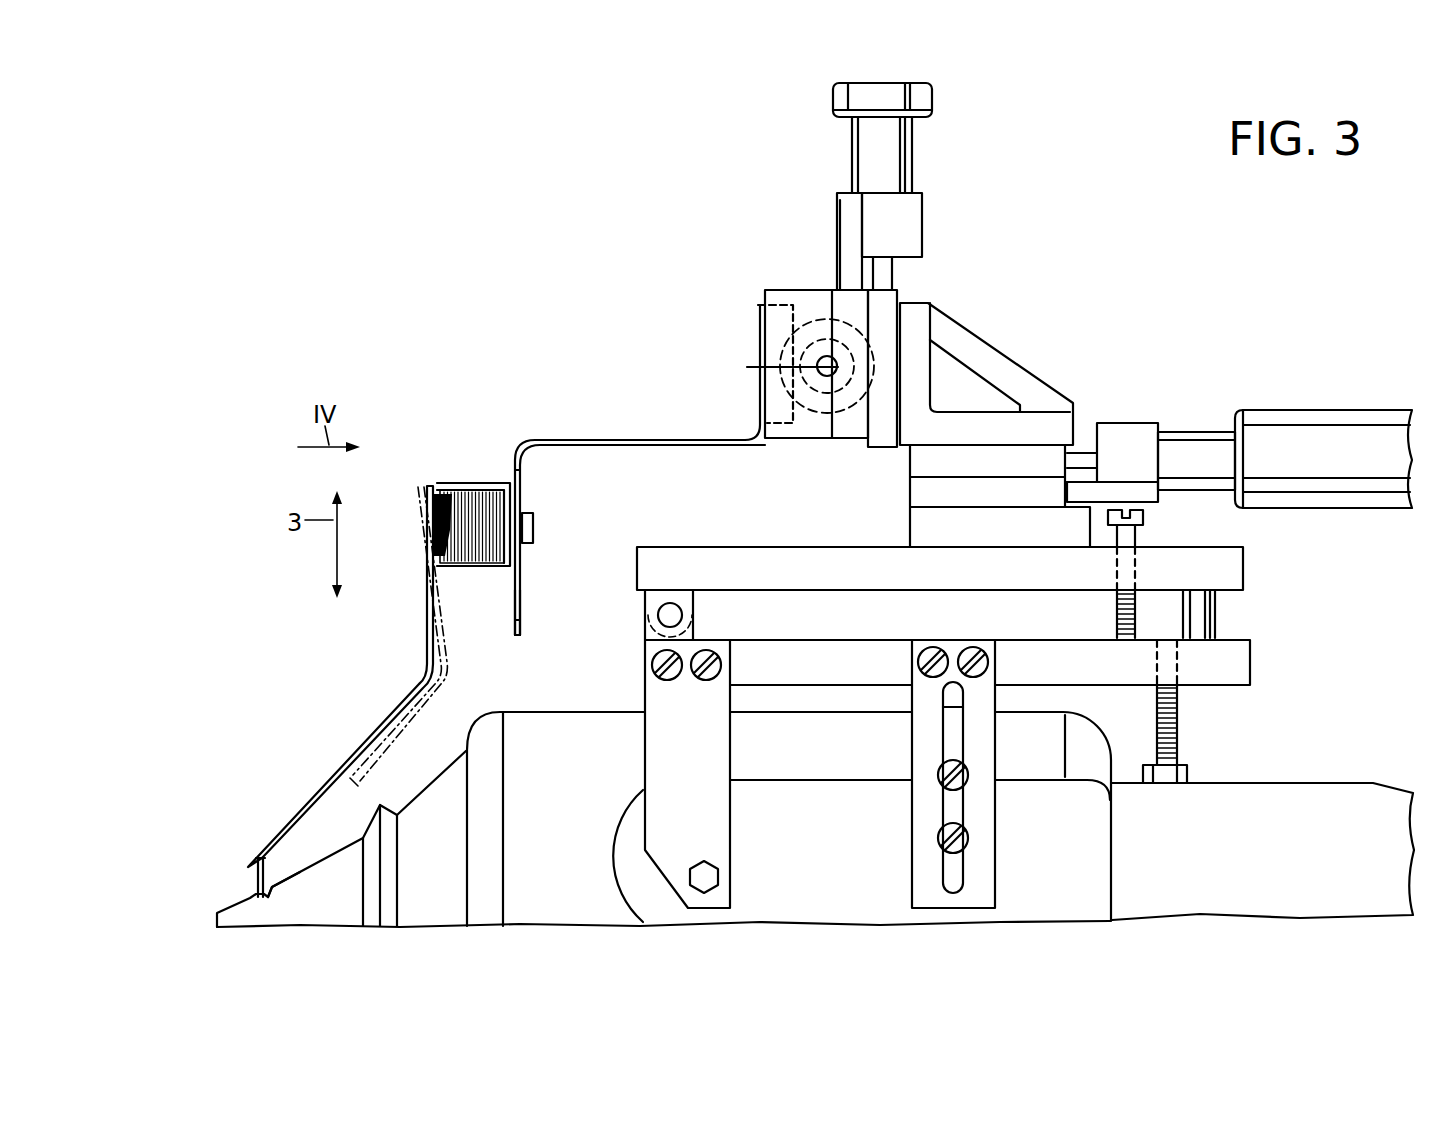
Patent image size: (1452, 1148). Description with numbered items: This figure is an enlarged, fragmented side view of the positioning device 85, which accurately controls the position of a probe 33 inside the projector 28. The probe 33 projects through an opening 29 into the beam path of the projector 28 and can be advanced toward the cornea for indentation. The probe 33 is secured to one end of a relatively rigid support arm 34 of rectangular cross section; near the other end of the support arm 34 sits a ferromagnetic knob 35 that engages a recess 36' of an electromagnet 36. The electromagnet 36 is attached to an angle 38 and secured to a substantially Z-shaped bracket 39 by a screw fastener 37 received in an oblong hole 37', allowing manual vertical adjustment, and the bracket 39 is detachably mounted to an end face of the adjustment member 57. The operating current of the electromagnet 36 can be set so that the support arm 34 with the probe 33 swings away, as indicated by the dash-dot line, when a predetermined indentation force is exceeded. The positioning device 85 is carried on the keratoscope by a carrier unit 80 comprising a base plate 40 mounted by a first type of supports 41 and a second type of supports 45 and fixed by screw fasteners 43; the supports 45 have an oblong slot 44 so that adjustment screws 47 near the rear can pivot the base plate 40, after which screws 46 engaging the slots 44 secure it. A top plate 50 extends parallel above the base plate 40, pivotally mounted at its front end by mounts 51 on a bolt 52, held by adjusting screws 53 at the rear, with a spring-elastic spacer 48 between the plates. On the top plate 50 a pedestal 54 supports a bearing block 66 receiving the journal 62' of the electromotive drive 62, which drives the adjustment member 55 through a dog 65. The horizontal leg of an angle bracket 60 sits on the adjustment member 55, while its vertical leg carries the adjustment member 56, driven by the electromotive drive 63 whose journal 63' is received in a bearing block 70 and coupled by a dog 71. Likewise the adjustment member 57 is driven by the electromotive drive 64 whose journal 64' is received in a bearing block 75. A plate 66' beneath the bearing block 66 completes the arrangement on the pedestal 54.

The projector 28 is at (333, 873).
The opening 29 is at (253, 897).
The probe 33 is at (273, 868).
The support arm 34 is at (396, 694).
The knob 35 is at (433, 527).
The electromagnet 36 is at (434, 493).
The recess 36' is at (473, 547).
The screw fastener 37 is at (558, 528).
The oblong hole 37' is at (554, 610).
The angle 38 is at (468, 482).
The bracket 39 is at (568, 438).
The base plate 40 is at (1253, 657).
The first type of supports 41 is at (708, 803).
The screw fasteners 43 is at (977, 645).
The oblong slot 44 is at (953, 807).
The second type of supports 45 is at (980, 868).
The screws 46 is at (943, 782).
The adjustment screw 47 is at (1178, 720).
The spacer 48 is at (1198, 605).
The top plate 50 is at (1247, 560).
The mounts 51 is at (656, 600).
The bolt 52 is at (667, 615).
The adjusting screws 53 is at (1115, 617).
The pedestal 54 is at (927, 525).
The adjustment member 55 is at (915, 487).
The adjustment member 56 is at (883, 437).
The adjustment member 57 is at (787, 288).
The angle bracket 60 is at (990, 342).
The electromotive drive 62 is at (1323, 433).
The journal 62' is at (1197, 436).
The electromotive drive 63 is at (913, 101).
The journal 63' is at (925, 155).
The electromotive drive 64 is at (827, 404).
The journal 64' is at (773, 349).
The dog 65 is at (1078, 452).
The bearing block 66 is at (1127, 433).
The clamping plate 66' is at (1147, 511).
The bearing block 70 is at (910, 207).
The dog 71 is at (892, 272).
The bearing block 75 is at (815, 318).
The carrier unit 80 is at (1348, 599).
The positioning device 85 is at (1120, 263).